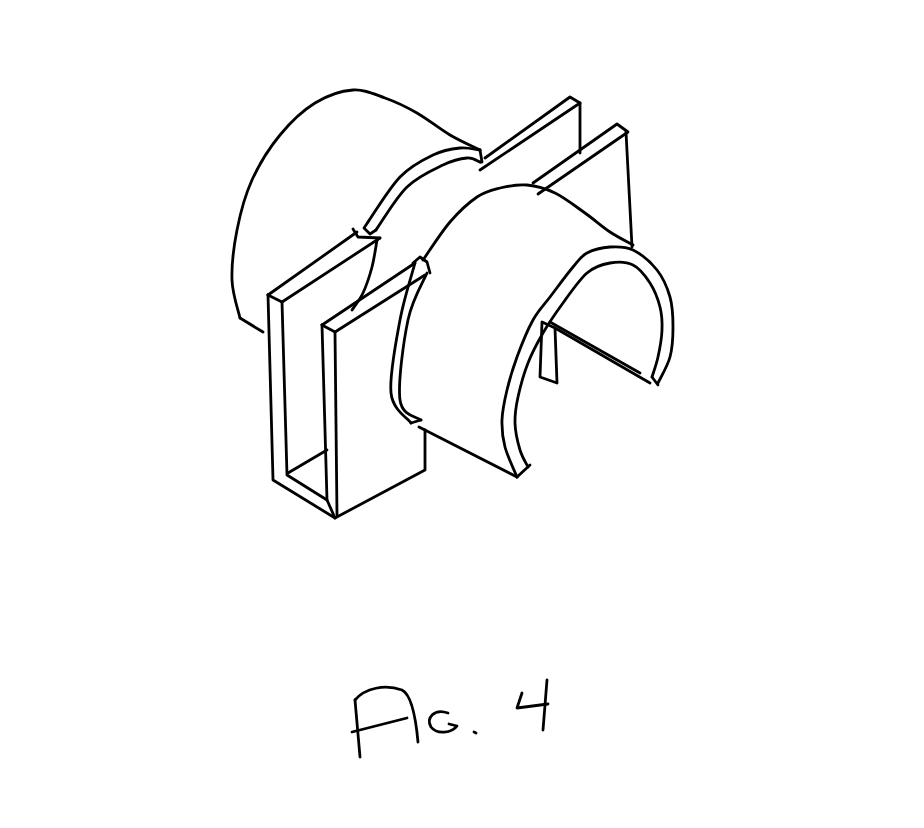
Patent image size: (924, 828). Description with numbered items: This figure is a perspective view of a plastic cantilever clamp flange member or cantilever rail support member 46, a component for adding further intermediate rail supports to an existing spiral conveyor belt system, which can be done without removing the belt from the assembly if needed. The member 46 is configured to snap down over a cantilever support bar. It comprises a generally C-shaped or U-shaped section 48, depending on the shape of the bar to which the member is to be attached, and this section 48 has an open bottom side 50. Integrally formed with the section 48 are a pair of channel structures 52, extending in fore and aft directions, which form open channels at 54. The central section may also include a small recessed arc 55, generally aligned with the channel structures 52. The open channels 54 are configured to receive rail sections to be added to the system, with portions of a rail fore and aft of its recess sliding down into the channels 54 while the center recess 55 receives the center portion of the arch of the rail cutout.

The cantilever rail support member 46 is at (762, 213).
The C-shaped or U-shaped section 48 is at (278, 135).
The open bottom side 50 is at (577, 442).
The channel structures 52 is at (560, 97).
The open channels 54 is at (598, 118).
The recessed arc 55 is at (412, 210).